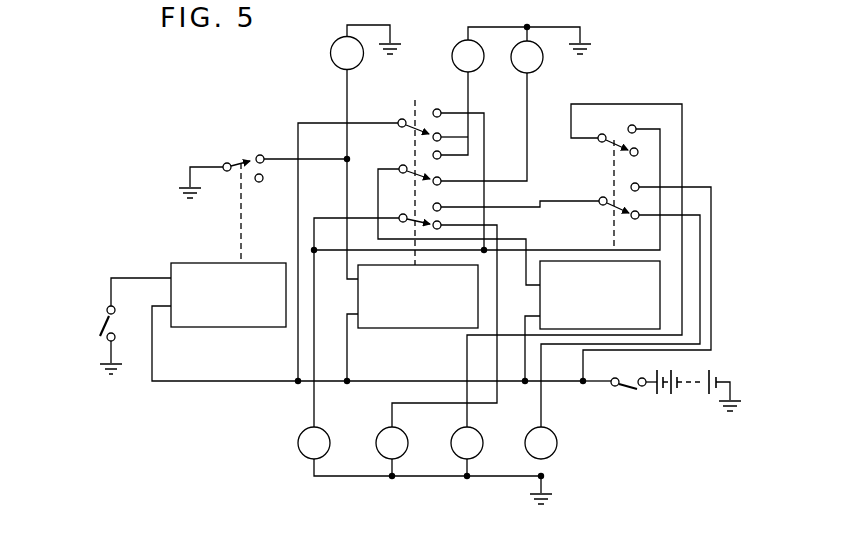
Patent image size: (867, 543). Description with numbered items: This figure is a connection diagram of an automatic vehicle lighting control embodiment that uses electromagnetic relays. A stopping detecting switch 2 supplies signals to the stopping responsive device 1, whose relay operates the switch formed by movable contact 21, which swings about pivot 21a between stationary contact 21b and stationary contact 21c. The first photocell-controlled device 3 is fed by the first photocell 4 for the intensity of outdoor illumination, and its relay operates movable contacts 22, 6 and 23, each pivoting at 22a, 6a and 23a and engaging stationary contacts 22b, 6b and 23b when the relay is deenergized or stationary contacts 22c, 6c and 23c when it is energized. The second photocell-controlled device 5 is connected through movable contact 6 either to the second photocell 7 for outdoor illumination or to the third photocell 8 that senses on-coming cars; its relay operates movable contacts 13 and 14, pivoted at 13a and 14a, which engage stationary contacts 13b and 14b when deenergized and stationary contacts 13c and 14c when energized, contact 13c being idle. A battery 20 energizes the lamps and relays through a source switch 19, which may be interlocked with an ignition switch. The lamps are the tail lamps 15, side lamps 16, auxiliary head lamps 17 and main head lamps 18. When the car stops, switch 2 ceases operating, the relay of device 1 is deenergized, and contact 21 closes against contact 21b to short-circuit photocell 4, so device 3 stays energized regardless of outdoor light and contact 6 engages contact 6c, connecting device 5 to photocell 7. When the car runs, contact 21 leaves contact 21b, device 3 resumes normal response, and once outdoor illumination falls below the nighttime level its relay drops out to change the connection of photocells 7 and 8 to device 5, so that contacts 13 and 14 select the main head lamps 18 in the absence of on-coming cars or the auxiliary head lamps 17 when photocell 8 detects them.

The stopping responsive device 1 is at (191, 263).
The stopping detecting switch 2 is at (103, 325).
The first photocell-controlled device 3 is at (358, 299).
The first photocell 4 is at (331, 54).
The second photocell-controlled device 5 is at (540, 300).
The movable contact 6 is at (420, 173).
The pivot of movable contact 6 6a is at (403, 173).
The stationary contact 6b is at (448, 148).
The stationary contact 6c is at (448, 174).
The second photocell 7 is at (541, 60).
The third photocell 8 is at (457, 22).
The movable contact 13 is at (620, 142).
The pivot of movable contact 13 13a is at (598, 127).
The stationary contact 13b is at (646, 121).
The stationary contact 13c is at (648, 159).
The movable contact 14 is at (621, 203).
The pivot of movable contact 14 14a is at (595, 190).
The stationary contact 14b is at (647, 197).
The stationary contact 14c is at (638, 226).
The tail lamps 15 is at (298, 445).
The side lamps 16 is at (382, 456).
The auxiliary head lamps 17 is at (458, 456).
The main head lamps 18 is at (558, 444).
The source switch 19 is at (628, 389).
The battery 20 is at (690, 386).
The switch (movable contact) 21 is at (243, 163).
The pivot of movable contact 21 21a is at (225, 163).
The stationary contact 21b is at (272, 150).
The stationary contact 21c is at (263, 181).
The movable contact 22 is at (421, 113).
The pivot of movable contact 22 22a is at (400, 119).
The stationary contact 22b is at (437, 109).
The stationary contact 22c is at (452, 128).
The movable contact 23 is at (415, 223).
The pivot of movable contact 23 23a is at (396, 209).
The stationary contact 23b is at (453, 198).
The stationary contact 23c is at (453, 217).